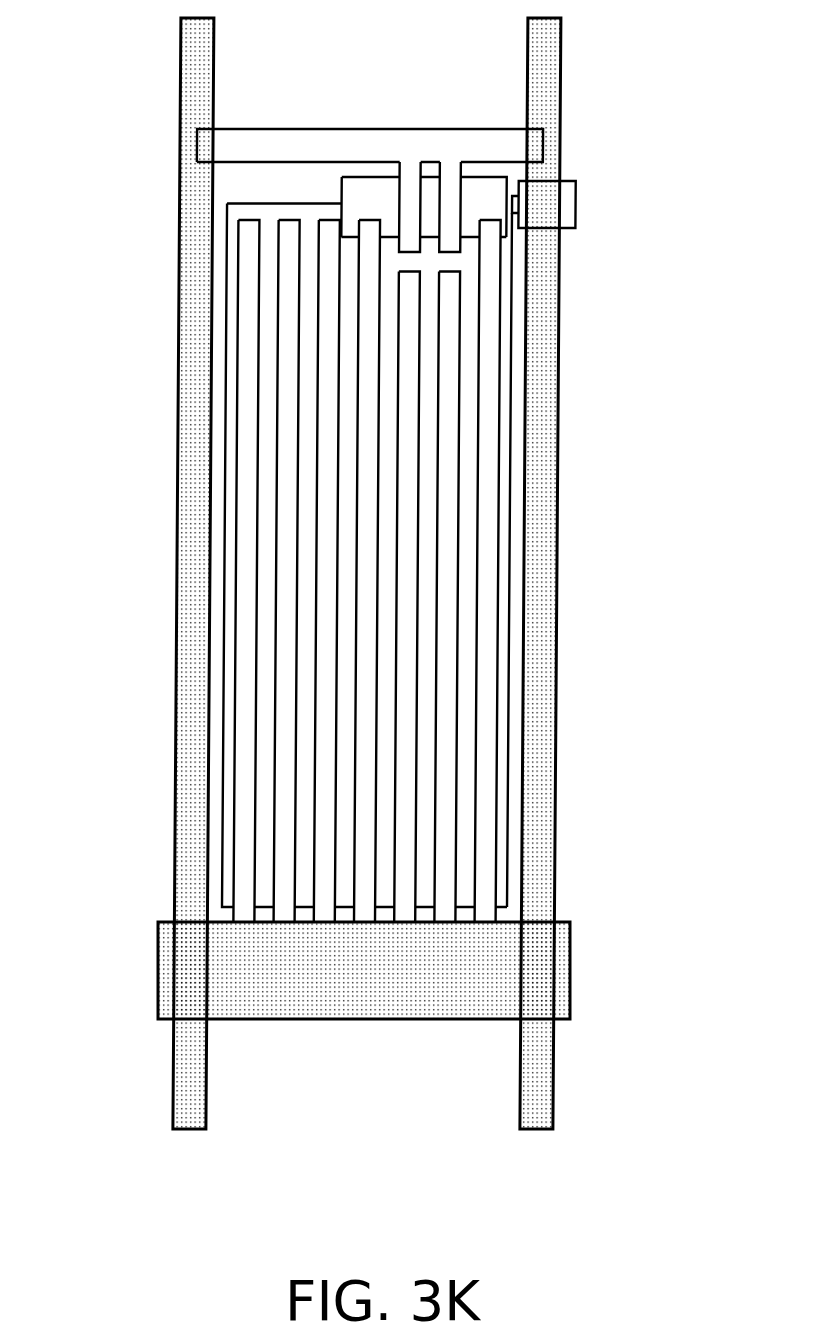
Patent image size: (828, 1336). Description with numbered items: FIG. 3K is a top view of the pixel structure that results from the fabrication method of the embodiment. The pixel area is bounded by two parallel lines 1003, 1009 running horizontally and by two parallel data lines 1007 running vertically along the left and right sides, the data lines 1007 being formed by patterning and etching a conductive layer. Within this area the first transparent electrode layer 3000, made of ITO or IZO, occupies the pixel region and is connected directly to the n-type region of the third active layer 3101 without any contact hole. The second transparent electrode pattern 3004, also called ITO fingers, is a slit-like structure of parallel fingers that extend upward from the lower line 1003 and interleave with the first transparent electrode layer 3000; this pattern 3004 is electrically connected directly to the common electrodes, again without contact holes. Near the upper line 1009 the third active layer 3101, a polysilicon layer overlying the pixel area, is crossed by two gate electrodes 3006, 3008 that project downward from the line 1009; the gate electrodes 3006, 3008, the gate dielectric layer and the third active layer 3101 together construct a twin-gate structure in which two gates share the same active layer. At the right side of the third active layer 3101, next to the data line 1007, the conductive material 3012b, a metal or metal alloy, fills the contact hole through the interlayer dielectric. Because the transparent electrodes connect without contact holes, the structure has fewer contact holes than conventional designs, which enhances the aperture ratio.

The parallel line 1003 is at (165, 972).
The data line 1007 is at (197, 303).
The parallel line 1009 is at (540, 143).
The first transparent electrode layer 3000 is at (510, 558).
The second transparent electrode pattern 3004 is at (487, 692).
The gate electrode 3006 is at (447, 188).
The gate electrode 3008 is at (406, 188).
The conductive material 3012b is at (571, 206).
The third active layer 3101 is at (339, 188).